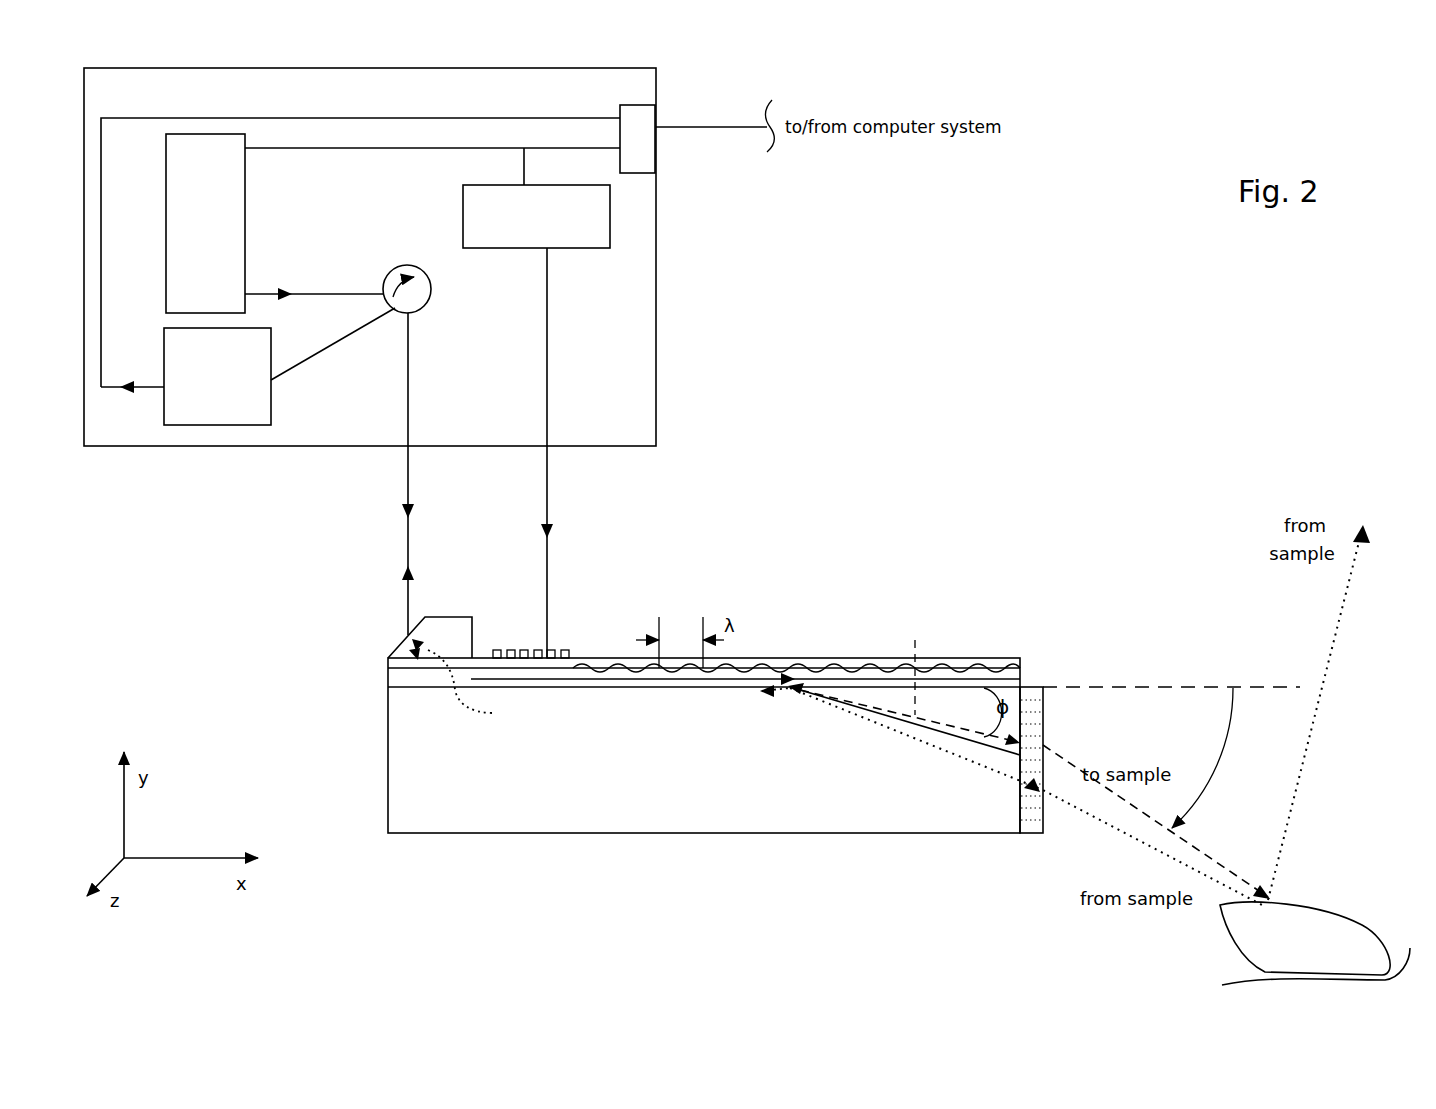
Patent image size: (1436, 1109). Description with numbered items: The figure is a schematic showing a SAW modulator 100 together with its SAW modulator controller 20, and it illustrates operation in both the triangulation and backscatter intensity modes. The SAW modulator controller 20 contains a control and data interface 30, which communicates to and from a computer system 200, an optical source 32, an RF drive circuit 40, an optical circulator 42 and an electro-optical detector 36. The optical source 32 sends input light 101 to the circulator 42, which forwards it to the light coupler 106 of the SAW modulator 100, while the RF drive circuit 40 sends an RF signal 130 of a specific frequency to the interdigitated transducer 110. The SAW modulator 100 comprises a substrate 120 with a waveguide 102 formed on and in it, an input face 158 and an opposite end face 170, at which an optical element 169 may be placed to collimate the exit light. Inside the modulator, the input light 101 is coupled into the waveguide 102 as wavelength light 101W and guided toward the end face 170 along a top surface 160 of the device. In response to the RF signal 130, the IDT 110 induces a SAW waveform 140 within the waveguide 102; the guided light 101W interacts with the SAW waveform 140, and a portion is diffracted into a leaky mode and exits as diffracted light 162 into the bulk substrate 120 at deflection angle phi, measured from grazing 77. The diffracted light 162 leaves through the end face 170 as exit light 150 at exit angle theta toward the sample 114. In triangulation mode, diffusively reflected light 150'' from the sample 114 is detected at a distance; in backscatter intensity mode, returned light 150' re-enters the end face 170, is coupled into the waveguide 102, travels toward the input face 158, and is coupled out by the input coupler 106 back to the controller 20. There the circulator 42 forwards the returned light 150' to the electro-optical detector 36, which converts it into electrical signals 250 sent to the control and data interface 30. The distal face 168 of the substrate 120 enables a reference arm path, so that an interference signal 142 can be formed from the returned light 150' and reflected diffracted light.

The SAW modulator controller 20 is at (370, 257).
The control and data interface 30 is at (656, 152).
The optical source 32 is at (205, 223).
The electro-optical detector 36 is at (217, 376).
The RF drive circuit 40 is at (536, 216).
The optical circulator 42 is at (407, 265).
The grazing 77 is at (1183, 687).
The SAW modulator 100 is at (748, 518).
The input light 101 is at (286, 292).
The wavelength light 101W is at (662, 689).
The waveguide 102 is at (414, 688).
The light coupler 106 is at (462, 617).
The interdigitated transducer 110 is at (568, 657).
The sample 114 is at (1315, 943).
The substrate 120 is at (570, 833).
The RF signal 130 is at (548, 530).
The SAW waveform 140 is at (797, 667).
The interference signal 142 is at (862, 705).
The exit light 150 is at (1166, 793).
The returned light 150' is at (766, 606).
The diffusively reflected light 150'' is at (1347, 712).
The input face 158 is at (386, 785).
The top surface 160 is at (935, 656).
The diffracted light 162 is at (915, 640).
The distal face 168 is at (940, 833).
The optical element 169 is at (1025, 833).
The end face 170 is at (1045, 688).
The computer system 200 is at (917, 155).
The electrical signals 250 is at (128, 392).